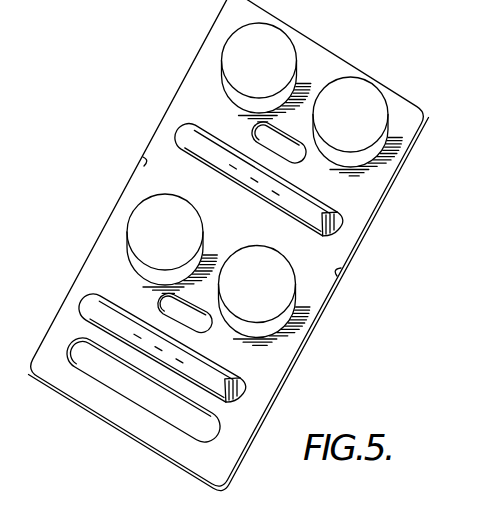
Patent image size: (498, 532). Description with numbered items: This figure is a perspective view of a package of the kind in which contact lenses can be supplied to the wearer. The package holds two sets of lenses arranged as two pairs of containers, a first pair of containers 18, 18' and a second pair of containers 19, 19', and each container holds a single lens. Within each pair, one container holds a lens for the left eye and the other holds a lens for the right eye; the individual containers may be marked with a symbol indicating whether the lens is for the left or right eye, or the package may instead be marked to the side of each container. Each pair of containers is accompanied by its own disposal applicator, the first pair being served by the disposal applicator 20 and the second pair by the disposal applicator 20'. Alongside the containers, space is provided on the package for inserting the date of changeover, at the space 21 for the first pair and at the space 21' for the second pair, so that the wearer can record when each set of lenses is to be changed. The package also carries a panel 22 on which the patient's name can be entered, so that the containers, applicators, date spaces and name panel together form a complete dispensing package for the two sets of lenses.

The container 18 is at (273, 64).
The container 18' is at (362, 111).
The container 19 is at (146, 243).
The container 19' is at (293, 296).
The disposal applicator 20 is at (288, 187).
The disposal applicator 20' is at (196, 360).
The space for inserting the date of changeover 21 is at (226, 118).
The space for inserting the date of changeover 21' is at (126, 293).
The panel for the patient's name 22 is at (212, 426).